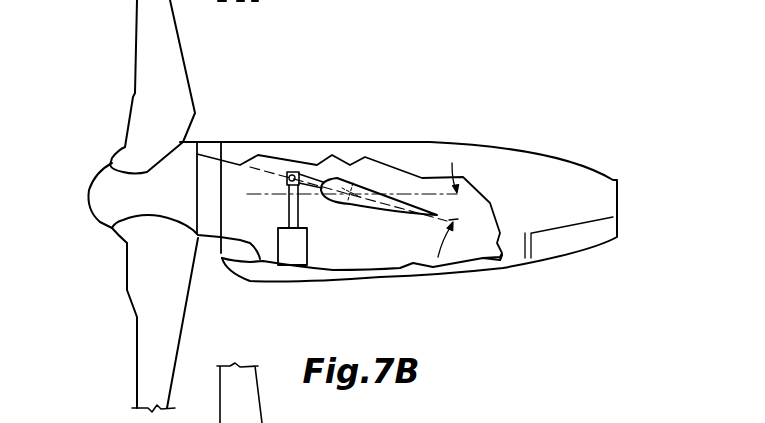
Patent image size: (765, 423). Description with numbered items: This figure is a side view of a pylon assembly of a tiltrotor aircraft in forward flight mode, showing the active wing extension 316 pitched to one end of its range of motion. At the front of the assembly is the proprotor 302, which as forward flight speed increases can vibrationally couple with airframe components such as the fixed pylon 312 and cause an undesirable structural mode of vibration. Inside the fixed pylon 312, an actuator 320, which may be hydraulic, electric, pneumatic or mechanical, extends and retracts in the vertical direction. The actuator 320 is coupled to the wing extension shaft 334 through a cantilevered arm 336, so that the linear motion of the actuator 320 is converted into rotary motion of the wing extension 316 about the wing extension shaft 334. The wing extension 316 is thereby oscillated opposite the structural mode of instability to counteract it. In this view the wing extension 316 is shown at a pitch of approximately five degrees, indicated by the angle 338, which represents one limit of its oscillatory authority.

The proprotor 302 is at (102, 190).
The fixed pylon 312 is at (535, 170).
The wing extension 316 is at (368, 188).
The actuator 320 is at (300, 248).
The wing extension shaft 334 is at (350, 175).
The cantilevered arm 336 is at (305, 173).
The angle 338 is at (445, 247).